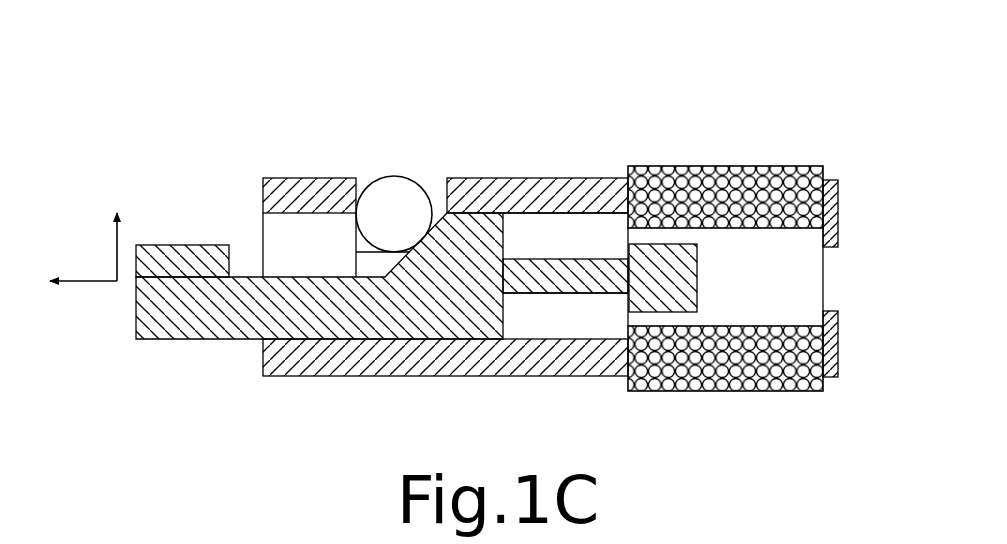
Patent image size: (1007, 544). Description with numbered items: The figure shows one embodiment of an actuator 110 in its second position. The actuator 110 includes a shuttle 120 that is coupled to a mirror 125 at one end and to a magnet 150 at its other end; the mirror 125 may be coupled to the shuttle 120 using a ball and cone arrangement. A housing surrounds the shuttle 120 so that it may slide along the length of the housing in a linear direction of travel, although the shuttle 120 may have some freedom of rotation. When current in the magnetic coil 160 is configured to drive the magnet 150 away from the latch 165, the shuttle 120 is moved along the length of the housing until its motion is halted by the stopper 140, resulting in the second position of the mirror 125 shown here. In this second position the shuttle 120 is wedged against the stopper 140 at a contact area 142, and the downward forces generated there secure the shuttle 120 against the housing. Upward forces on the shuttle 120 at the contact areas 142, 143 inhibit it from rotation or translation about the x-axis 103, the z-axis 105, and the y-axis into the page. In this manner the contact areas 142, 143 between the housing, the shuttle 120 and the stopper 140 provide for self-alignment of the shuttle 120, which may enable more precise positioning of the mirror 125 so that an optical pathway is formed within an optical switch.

The x-axis 103 is at (93, 283).
The z-axis 105 is at (117, 244).
The actuator 110 is at (849, 90).
The shuttle 120 is at (333, 315).
The mirror 125 is at (195, 260).
The stopper 140 is at (394, 190).
The contact area 142 is at (427, 240).
The contact area 143 is at (434, 342).
The magnet 150 is at (668, 272).
The magnetic coil 160 is at (712, 165).
The latch 165 is at (838, 208).